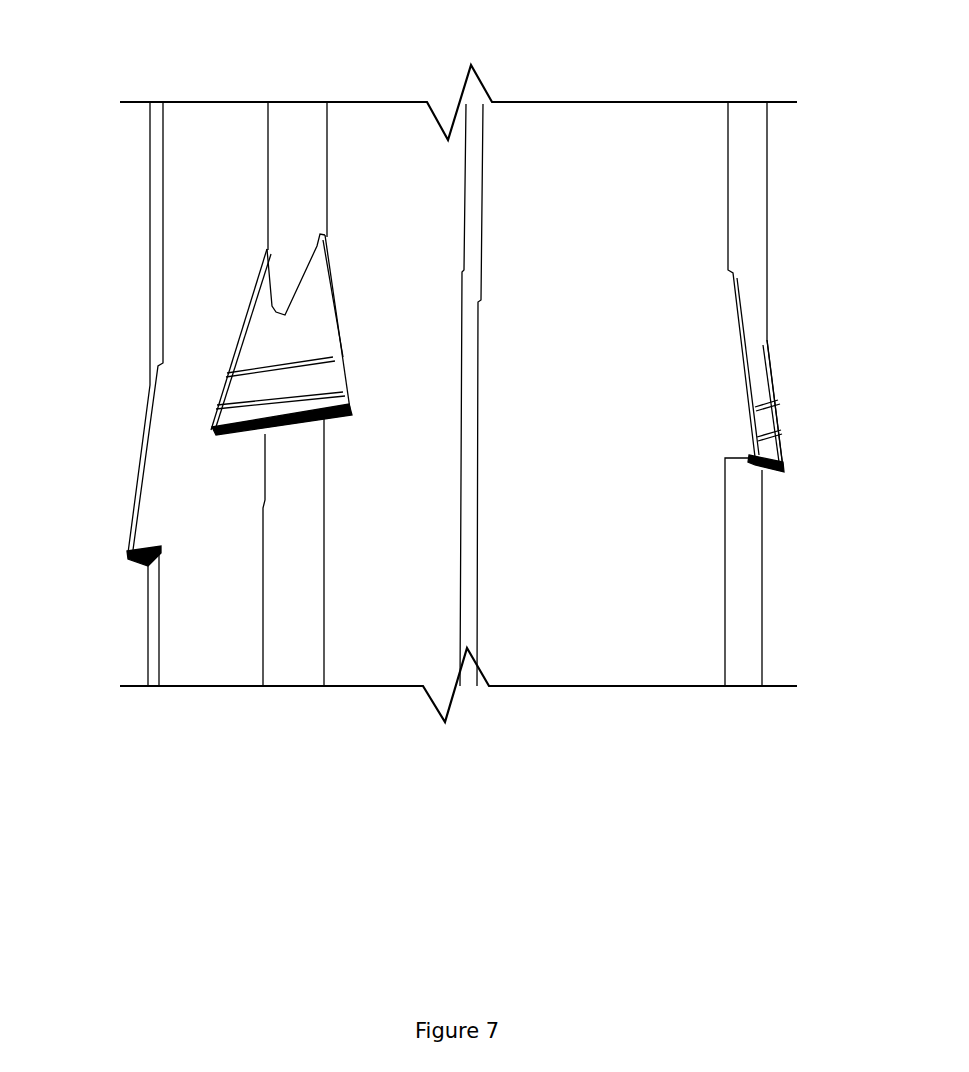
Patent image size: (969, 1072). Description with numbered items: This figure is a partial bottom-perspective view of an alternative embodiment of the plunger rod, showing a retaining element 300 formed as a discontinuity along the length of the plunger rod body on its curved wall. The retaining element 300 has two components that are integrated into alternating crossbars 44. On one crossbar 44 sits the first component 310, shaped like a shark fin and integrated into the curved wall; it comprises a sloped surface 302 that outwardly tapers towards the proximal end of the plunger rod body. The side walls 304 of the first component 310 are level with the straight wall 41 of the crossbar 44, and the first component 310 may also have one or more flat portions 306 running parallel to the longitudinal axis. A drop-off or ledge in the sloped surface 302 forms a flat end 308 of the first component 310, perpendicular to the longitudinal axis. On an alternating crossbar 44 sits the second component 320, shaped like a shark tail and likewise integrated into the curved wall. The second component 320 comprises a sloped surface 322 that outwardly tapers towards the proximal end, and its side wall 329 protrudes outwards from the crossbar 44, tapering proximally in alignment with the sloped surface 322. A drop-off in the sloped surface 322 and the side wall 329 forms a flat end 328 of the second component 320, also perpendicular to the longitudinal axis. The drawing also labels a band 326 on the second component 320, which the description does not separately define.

The retaining element 300 is at (166, 66).
The crossbar 44 is at (268, 203).
The straight wall 41 is at (675, 292).
The sloped surface 322 is at (270, 337).
The second component 320 is at (227, 370).
The side wall 329 is at (351, 378).
The lower band of first wedge 326 is at (245, 391).
The flat end 328 is at (247, 432).
The first component 310 is at (775, 373).
The sloped surface 302 is at (768, 395).
The flat portion 306 is at (772, 450).
The flat end 308 is at (772, 470).
The side wall 304 is at (731, 425).